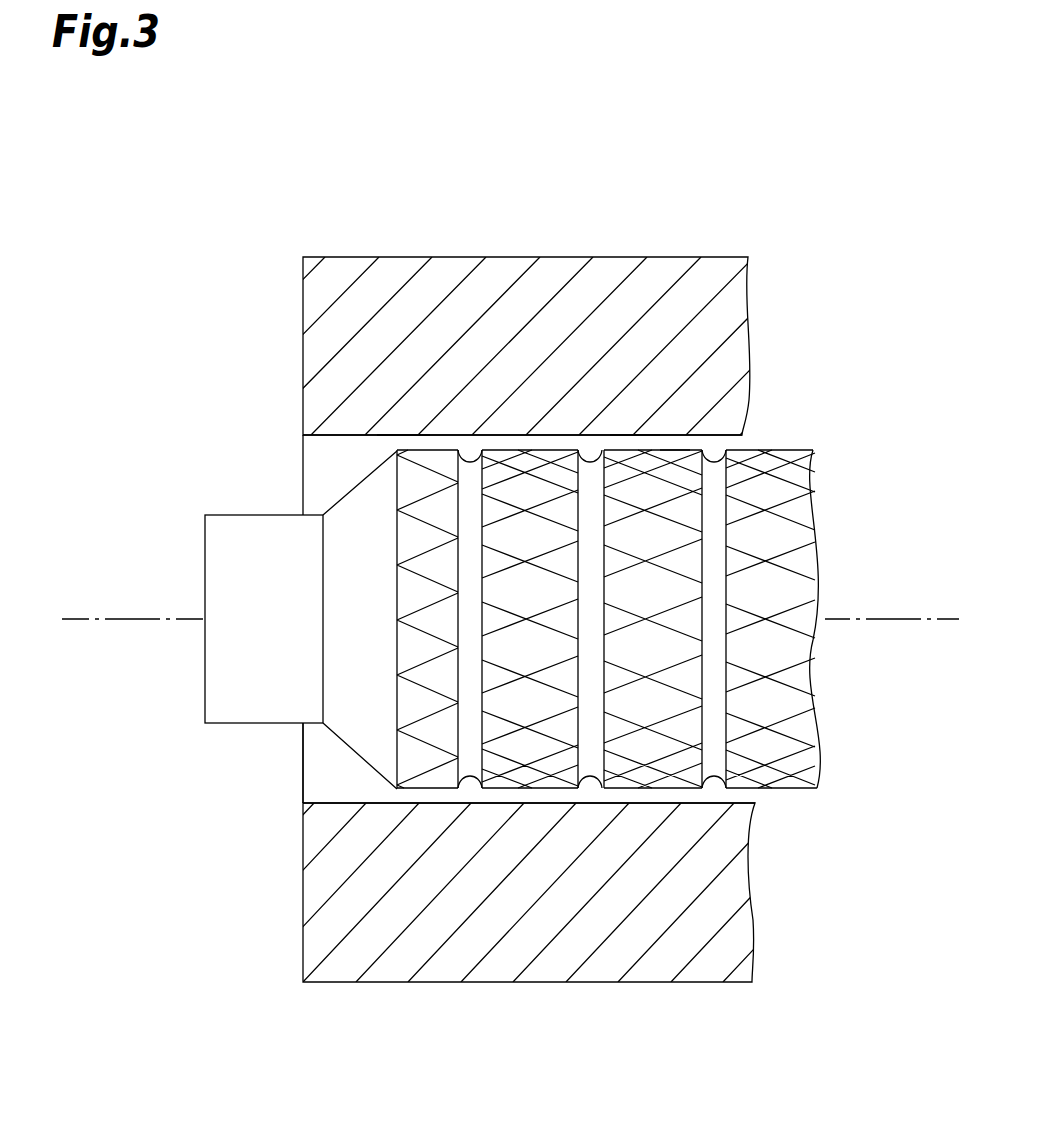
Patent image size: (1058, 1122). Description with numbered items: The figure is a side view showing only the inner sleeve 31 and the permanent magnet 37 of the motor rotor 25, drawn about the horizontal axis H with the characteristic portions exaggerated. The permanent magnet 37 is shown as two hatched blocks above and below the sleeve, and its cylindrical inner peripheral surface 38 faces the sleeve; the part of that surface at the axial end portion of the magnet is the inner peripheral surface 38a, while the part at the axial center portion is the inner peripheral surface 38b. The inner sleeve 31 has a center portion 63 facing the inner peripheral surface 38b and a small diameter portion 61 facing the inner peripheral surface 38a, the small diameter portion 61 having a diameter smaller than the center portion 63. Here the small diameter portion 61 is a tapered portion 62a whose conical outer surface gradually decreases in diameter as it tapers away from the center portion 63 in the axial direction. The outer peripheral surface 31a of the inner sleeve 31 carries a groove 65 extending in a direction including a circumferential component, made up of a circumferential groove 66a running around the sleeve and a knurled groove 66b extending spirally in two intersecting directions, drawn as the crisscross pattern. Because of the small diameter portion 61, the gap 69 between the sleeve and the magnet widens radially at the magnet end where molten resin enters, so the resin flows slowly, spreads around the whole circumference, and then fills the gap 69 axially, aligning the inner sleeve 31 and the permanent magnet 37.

The motor rotor 25 is at (298, 184).
The permanent magnet 37 is at (707, 272).
The inner peripheral surface 38 is at (652, 188).
The inner peripheral surface of the end portion 38a is at (377, 445).
The inner peripheral surface of the center portion 38b is at (655, 440).
The inner sleeve 31 is at (242, 707).
The outer peripheral surface 31a is at (780, 438).
The small diameter portion 61 is at (273, 619).
The tapered portion 62a is at (363, 475).
The center portion 63 is at (673, 447).
The groove 65 is at (639, 752).
The circumferential groove 66a is at (472, 762).
The knurled groove 66b is at (663, 733).
The gap 69 is at (314, 776).
The axis H is at (910, 619).